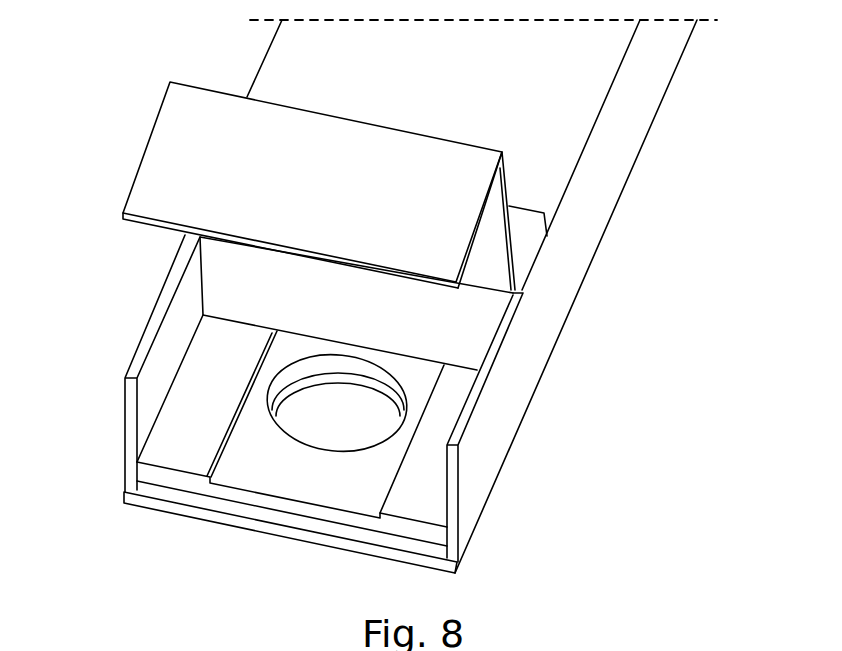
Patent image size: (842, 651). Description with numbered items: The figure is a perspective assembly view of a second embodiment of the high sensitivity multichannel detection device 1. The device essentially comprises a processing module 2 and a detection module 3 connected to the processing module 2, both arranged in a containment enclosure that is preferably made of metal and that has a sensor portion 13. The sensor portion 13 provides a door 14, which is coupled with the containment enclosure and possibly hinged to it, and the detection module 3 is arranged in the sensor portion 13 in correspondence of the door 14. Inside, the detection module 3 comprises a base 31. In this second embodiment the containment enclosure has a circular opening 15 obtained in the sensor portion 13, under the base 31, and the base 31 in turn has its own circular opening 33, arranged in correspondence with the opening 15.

The high sensitivity multichannel detection device 1 is at (697, 121).
The processing module 2 is at (607, 208).
The detection module 3 is at (495, 458).
The sensor portion 13 is at (157, 323).
The door 14 is at (170, 178).
The circular opening 15 is at (324, 421).
The base 31 is at (265, 505).
The circular opening 33 is at (265, 428).